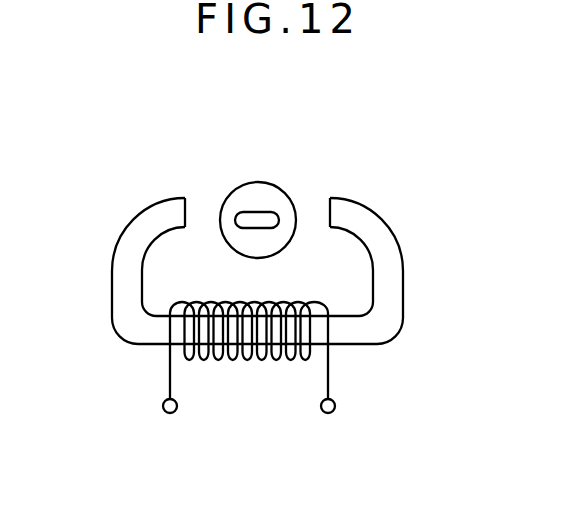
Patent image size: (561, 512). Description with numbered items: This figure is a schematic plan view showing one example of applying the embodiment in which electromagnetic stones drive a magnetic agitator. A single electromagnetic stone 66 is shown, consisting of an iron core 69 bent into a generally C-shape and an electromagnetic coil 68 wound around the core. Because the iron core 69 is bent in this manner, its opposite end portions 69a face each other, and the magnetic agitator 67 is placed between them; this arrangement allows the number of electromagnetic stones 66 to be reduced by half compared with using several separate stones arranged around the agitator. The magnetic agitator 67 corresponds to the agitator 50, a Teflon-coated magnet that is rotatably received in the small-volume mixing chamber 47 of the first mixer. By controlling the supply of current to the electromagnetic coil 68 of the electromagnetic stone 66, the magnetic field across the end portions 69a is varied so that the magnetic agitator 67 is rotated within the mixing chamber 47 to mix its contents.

The electromagnetic stone 66 is at (255, 285).
The iron core 69 is at (377, 330).
The end portions 69a is at (180, 210).
The electromagnetic coil 68 is at (330, 382).
The mixing chamber 47 is at (237, 202).
The magnetic agitator 67 is at (257, 218).
The agitator 50 is at (286, 181).